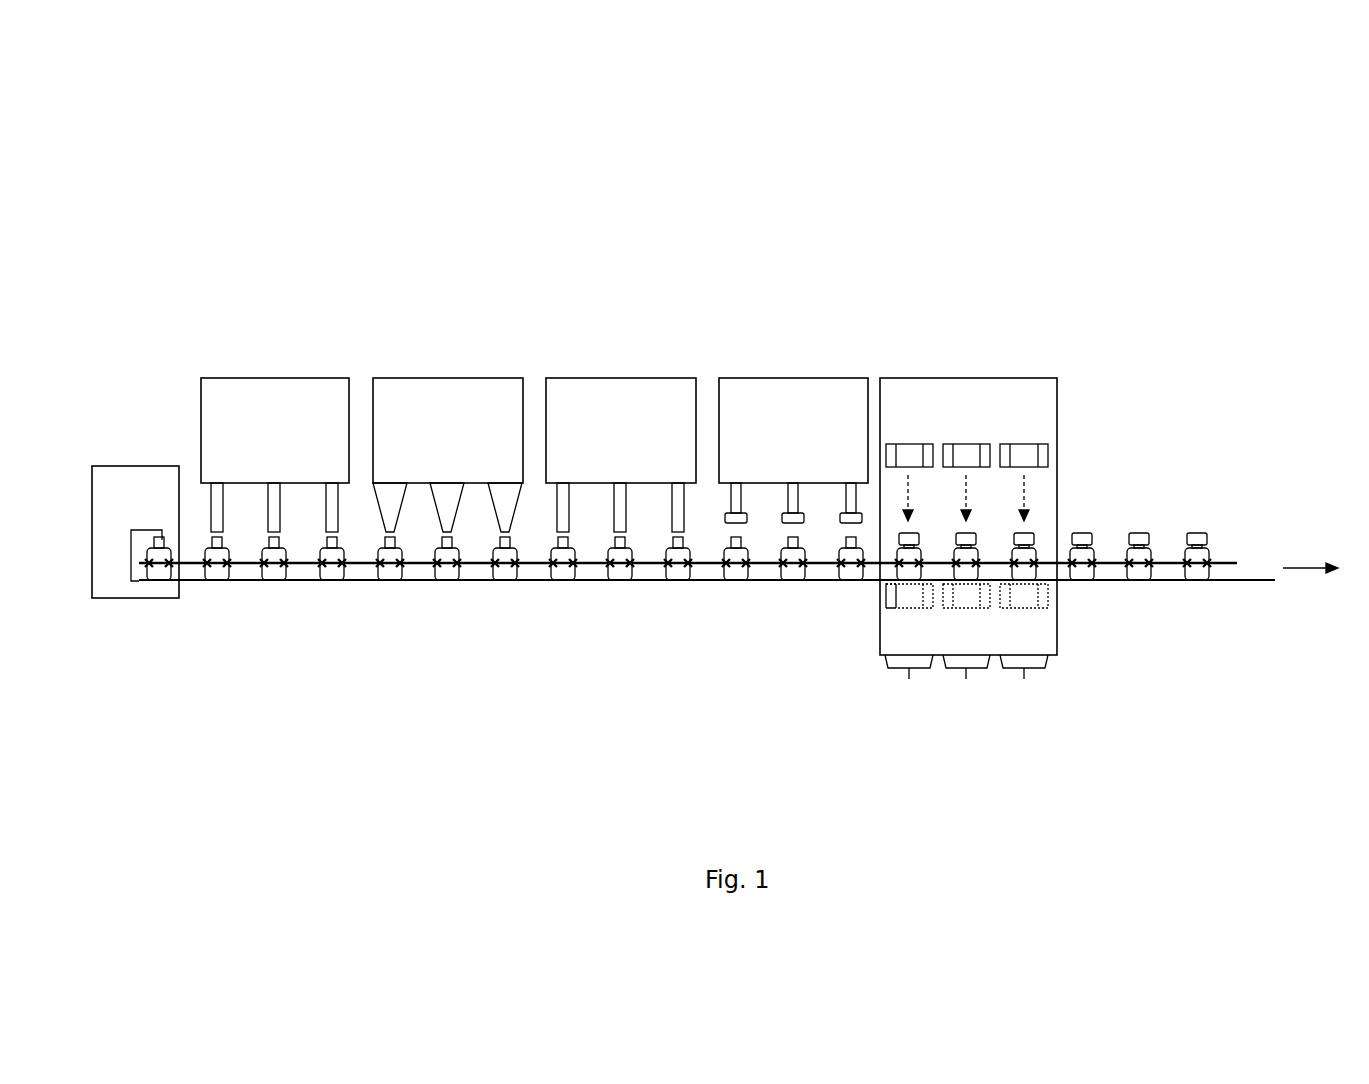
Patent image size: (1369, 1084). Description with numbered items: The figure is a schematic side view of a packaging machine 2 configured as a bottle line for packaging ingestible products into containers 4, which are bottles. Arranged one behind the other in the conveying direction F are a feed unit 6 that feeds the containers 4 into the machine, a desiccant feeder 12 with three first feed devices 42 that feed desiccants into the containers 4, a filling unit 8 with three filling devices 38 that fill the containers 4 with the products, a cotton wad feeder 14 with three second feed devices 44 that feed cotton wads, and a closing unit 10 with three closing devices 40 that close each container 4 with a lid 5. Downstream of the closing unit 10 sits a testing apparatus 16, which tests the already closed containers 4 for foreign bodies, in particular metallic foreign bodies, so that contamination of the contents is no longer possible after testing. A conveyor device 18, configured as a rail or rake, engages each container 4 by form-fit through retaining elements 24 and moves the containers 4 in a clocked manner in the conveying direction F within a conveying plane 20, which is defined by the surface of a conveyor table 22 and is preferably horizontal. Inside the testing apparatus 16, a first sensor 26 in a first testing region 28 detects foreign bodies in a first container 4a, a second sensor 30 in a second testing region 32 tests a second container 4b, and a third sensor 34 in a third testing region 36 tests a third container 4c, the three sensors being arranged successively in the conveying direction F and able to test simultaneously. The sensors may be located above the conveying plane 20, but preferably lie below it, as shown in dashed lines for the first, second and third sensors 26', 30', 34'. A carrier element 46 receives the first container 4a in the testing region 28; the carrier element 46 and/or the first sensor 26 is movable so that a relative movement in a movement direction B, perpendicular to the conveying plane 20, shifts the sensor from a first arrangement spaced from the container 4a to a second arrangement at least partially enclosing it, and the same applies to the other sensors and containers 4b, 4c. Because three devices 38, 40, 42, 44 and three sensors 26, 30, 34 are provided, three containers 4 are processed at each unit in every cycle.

The packaging machine 2 is at (744, 180).
The containers 4 is at (274, 574).
The first container to be tested 4a is at (908, 576).
The second container to be tested 4b is at (966, 576).
The third container to be tested 4c is at (1023, 576).
The lid 5 is at (1085, 532).
The feed unit 6 is at (148, 486).
The filling unit 8 is at (397, 402).
The closing unit 10 is at (741, 402).
The desiccant feeder 12 is at (259, 402).
The cotton wad feeder 14 is at (570, 402).
The testing apparatus 16 is at (912, 402).
The conveyor device 18 is at (1233, 563).
The conveying plane 20 is at (1275, 580).
The conveyor table 22 is at (1275, 581).
The retaining elements 24 is at (515, 570).
The first sensor 26 is at (973, 337).
The first sensor (below conveying plane) 26' is at (858, 624).
The first testing region 28 is at (909, 682).
The second sensor 30 is at (1030, 337).
The second sensor (below conveying plane) 30' is at (972, 673).
The second testing region 32 is at (966, 682).
The third sensor 34 is at (1088, 337).
The third sensor (below conveying plane) 34' is at (1073, 647).
The third testing region 36 is at (1024, 682).
The filling devices 38 is at (391, 490).
The closing devices 40 is at (736, 483).
The first feed devices 42 is at (274, 497).
The second feed devices 44 is at (564, 488).
The carrier element 46 is at (886, 585).
The movement direction B is at (972, 498).
The conveying direction F is at (1312, 559).